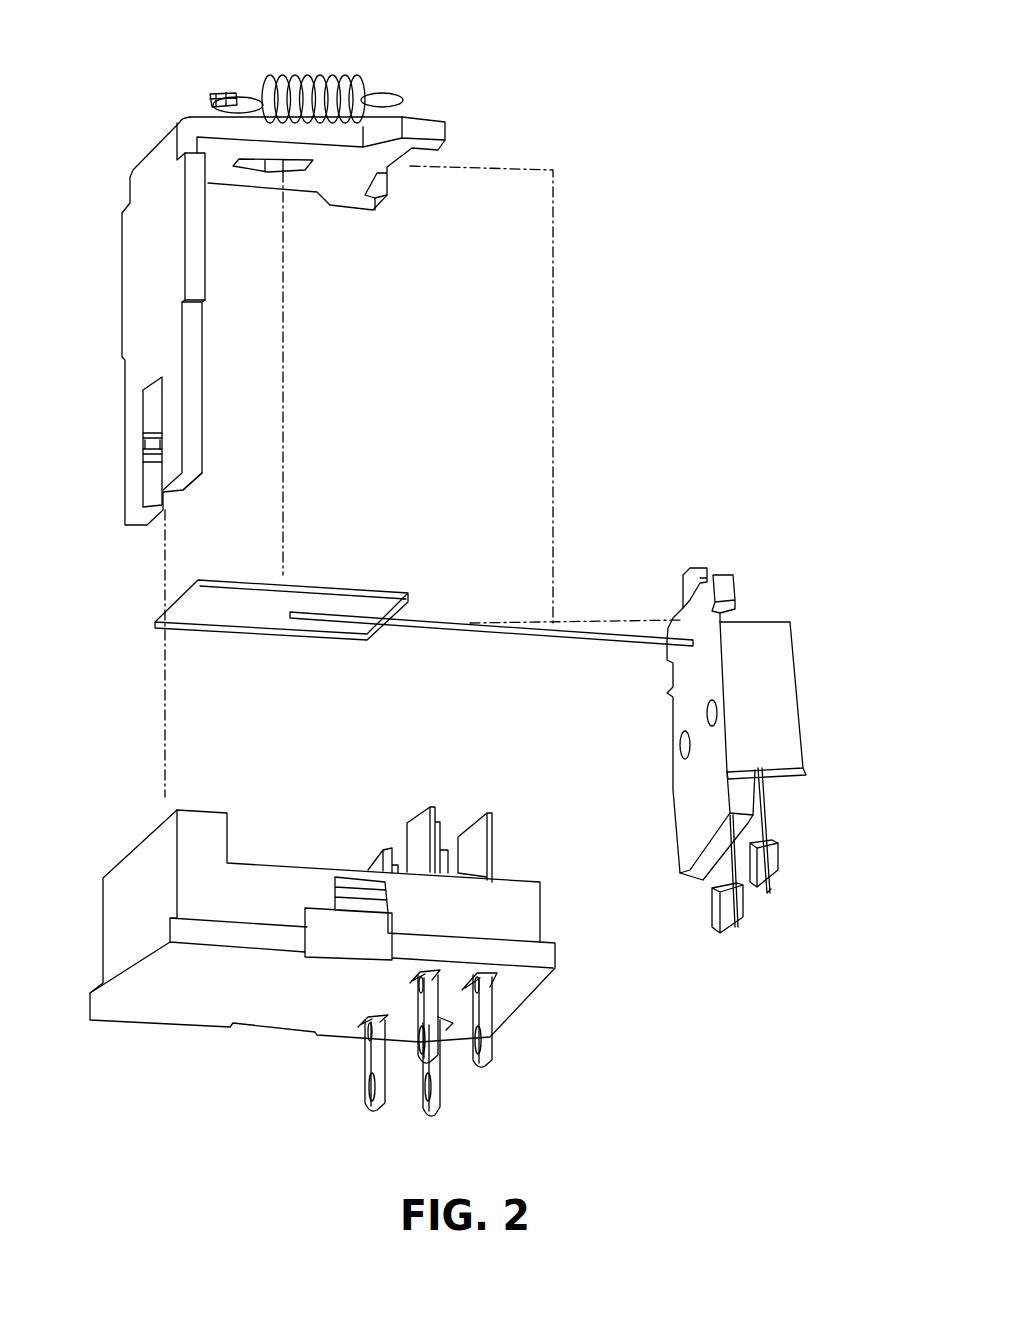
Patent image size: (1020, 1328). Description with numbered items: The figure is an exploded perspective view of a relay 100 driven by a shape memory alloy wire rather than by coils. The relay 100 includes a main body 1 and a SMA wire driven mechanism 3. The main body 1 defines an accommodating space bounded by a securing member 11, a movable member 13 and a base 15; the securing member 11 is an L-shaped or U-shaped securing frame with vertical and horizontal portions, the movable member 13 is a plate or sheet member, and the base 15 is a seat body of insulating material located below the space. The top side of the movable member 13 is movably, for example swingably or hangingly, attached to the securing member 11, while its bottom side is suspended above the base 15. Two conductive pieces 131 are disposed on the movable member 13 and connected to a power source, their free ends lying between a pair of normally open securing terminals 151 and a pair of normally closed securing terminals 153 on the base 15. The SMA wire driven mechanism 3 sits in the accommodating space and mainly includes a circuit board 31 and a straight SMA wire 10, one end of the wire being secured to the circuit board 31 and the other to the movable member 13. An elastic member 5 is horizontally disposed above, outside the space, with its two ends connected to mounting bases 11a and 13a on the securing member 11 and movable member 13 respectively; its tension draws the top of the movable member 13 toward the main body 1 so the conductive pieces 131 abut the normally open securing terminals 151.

The relay 100 is at (862, 63).
The main body 1 is at (149, 137).
The securing member 11 is at (132, 247).
The mounting base 11a is at (222, 93).
The elastic member 5 is at (313, 78).
The SMA wire driven mechanism 3 is at (445, 707).
The circuit board 31 is at (233, 617).
The SMA wire 10 is at (450, 630).
The movable member 13 is at (790, 695).
The mounting base 13a is at (697, 568).
The conductive pieces 131 is at (770, 815).
The base 15 is at (525, 918).
The normally open securing terminals 151 is at (490, 1035).
The normally closed securing terminals 153 is at (420, 1045).